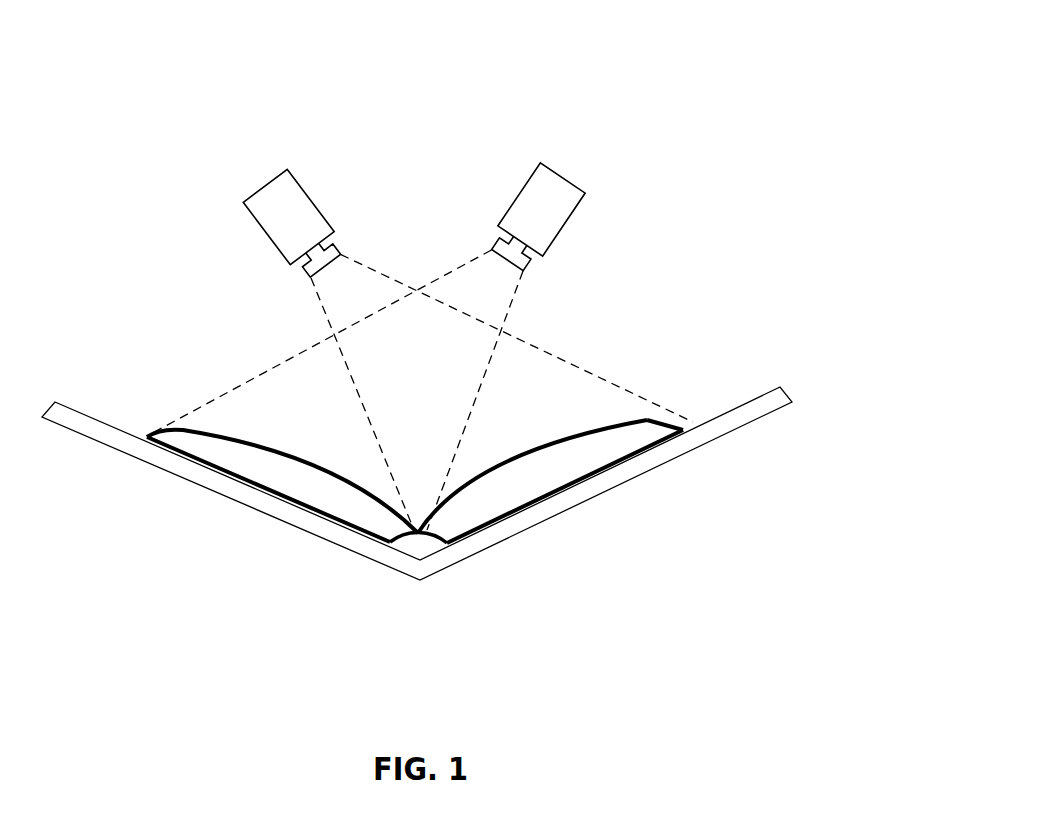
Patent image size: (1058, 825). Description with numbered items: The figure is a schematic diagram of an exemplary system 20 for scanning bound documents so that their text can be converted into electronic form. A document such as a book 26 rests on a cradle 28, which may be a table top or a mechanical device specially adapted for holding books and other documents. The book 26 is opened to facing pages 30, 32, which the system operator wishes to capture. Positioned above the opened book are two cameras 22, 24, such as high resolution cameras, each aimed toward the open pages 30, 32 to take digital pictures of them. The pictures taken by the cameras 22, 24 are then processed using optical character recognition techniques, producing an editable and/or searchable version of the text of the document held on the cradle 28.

The system for scanning bound documents 20 is at (708, 110).
The camera 22 is at (245, 201).
The camera 24 is at (587, 193).
The book 26 is at (662, 412).
The cradle 28 is at (790, 395).
The page 30 is at (312, 460).
The page 32 is at (533, 453).